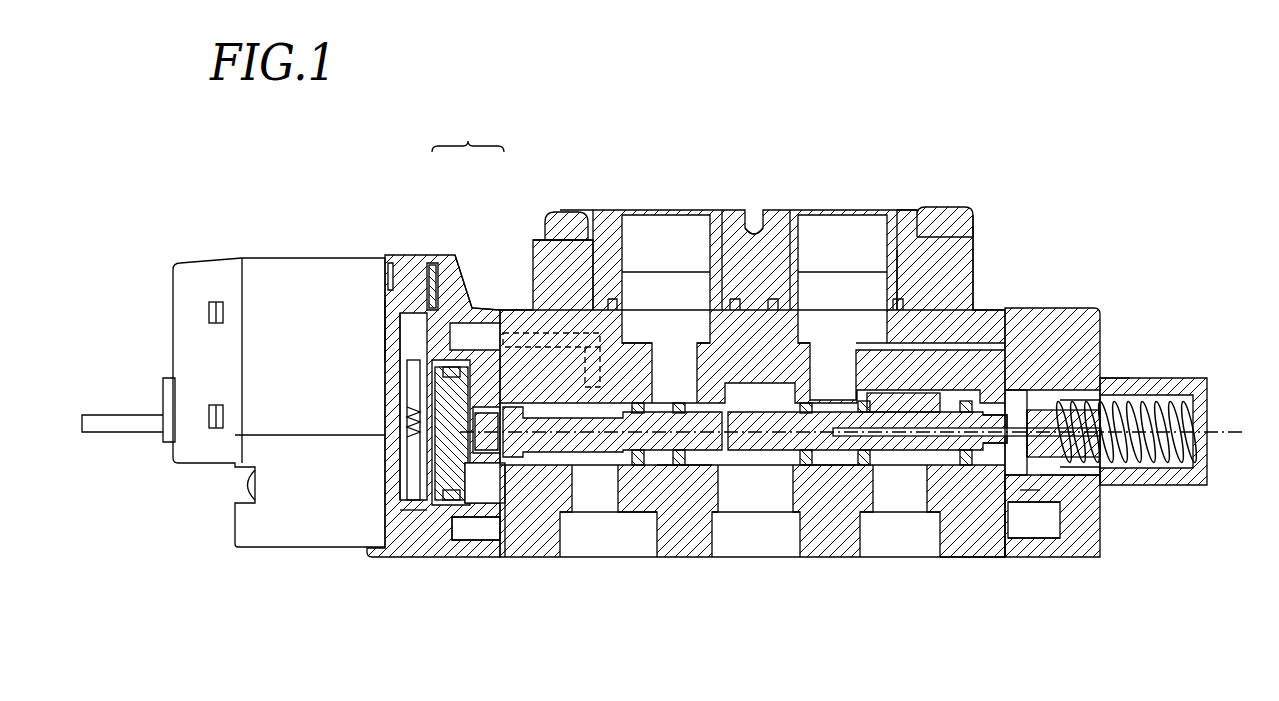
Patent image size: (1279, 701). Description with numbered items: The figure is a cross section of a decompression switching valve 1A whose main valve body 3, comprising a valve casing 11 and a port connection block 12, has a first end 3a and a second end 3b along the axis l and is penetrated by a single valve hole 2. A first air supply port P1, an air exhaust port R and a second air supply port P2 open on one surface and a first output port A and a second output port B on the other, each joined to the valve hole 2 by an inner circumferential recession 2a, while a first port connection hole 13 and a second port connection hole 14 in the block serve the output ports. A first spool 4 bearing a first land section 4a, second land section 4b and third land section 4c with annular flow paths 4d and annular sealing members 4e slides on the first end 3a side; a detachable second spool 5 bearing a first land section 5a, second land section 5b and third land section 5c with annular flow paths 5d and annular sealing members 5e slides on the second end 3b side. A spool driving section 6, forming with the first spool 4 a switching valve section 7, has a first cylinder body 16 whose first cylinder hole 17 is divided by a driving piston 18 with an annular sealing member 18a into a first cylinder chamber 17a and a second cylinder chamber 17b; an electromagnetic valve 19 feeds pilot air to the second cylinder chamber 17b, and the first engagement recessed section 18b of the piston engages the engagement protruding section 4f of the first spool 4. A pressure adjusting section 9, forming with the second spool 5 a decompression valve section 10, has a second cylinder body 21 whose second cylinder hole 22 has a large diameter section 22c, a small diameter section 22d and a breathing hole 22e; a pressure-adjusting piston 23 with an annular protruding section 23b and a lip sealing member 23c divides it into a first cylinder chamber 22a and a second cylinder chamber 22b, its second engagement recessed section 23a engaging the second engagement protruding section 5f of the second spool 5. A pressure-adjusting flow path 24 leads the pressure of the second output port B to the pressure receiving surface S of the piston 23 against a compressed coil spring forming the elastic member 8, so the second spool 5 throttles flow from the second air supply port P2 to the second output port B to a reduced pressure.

The decompression switching valve 1A is at (938, 85).
The valve hole 2 is at (612, 540).
The inner circumferential recessions 2a is at (760, 330).
The main valve body 3 is at (962, 152).
The first end 3a is at (485, 503).
The second end 3b is at (1018, 531).
The first spool 4 is at (522, 307).
The first land section 4a is at (522, 470).
The second land section 4b is at (668, 470).
The third land section 4c is at (722, 470).
The annular flow paths 4d is at (562, 225).
The annular sealing members 4e is at (602, 297).
The engagement protruding section 4f is at (398, 345).
The second spool 5 is at (958, 470).
The first land section 5a is at (990, 428).
The second land section 5b is at (862, 466).
The third land section 5c is at (795, 466).
The annular flow paths 5d is at (968, 402).
The annular sealing members 5e is at (868, 402).
The second engagement protruding section 5f is at (1020, 414).
The spool driving section 6 is at (428, 262).
The switching valve section 7 is at (468, 131).
The elastic member 8 is at (1185, 380).
The pressure adjusting section 9 is at (988, 560).
The decompression valve section 10 is at (935, 645).
The valve casing 11 is at (977, 307).
The port connection block 12 is at (937, 270).
The first port connection hole 13 is at (666, 252).
The second port connection hole 14 is at (842, 252).
The first cylinder body 16 is at (445, 445).
The first cylinder hole 17 is at (425, 318).
The first cylinder chamber 17a is at (505, 503).
The second cylinder chamber 17b is at (413, 470).
The driving piston 18 is at (400, 455).
The annular sealing member 18a is at (450, 503).
The first engagement recessed section 18b is at (400, 530).
The electromagnetic valve 19 is at (233, 402).
The second cylinder body 21 is at (1060, 525).
The second cylinder hole 22 is at (1189, 258).
The first cylinder chamber 22a is at (1045, 400).
The second cylinder chamber 22b is at (1105, 472).
The large diameter section 22c is at (1090, 410).
The small diameter section 22d is at (1107, 408).
The breathing hole 22e is at (1130, 385).
The pressure-adjusting piston 23 is at (1055, 395).
The second engagement recessed section 23a is at (1040, 540).
The annular protruding section 23b is at (1085, 478).
The sealing member 23c is at (1070, 482).
The pressure-adjusting flow path 24 is at (845, 412).
The first output port A is at (666, 328).
The second output port B is at (842, 328).
The first air supply port P1 is at (620, 535).
The second air supply port P2 is at (900, 535).
The air exhaust port R is at (755, 535).
The pressure receiving surface S is at (1075, 500).
The axis l is at (861, 432).